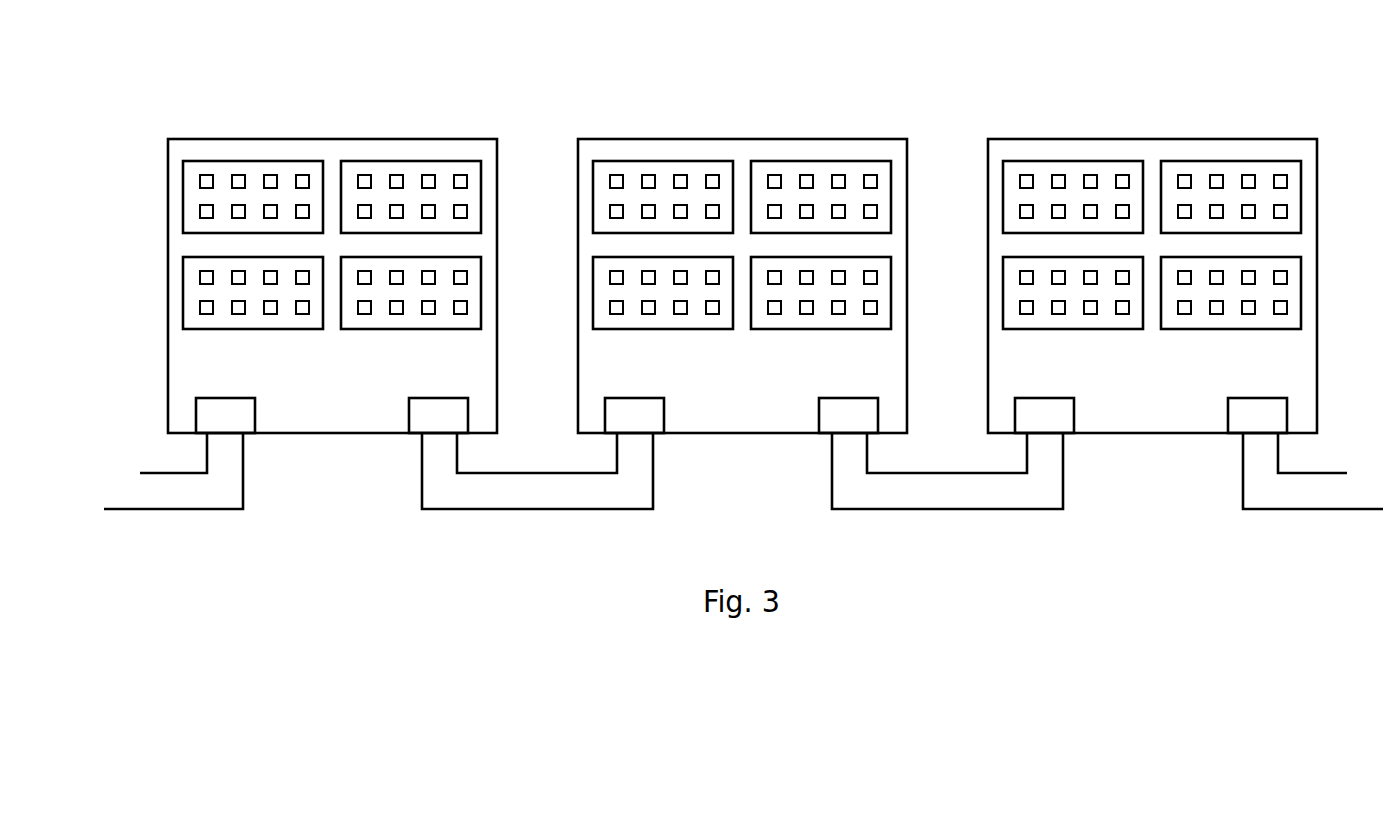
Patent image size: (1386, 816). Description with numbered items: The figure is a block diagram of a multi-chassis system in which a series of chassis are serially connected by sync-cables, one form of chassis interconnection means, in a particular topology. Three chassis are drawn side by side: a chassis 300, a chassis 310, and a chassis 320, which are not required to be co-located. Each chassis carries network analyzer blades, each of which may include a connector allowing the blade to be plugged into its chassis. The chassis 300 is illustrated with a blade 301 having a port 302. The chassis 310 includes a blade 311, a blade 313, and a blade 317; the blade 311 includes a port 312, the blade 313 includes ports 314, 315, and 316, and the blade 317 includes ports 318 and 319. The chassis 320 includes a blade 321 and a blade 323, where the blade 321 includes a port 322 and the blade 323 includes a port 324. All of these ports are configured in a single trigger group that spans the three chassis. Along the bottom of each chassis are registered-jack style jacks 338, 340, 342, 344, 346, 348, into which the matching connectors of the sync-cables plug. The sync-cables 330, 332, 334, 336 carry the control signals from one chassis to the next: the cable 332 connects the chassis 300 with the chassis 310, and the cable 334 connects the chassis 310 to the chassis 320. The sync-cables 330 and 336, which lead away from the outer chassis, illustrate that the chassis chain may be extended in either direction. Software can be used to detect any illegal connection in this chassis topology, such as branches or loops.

The chassis 300 is at (310, 278).
The blade 301 is at (225, 324).
The port 302 is at (235, 315).
The chassis 310 is at (718, 271).
The blade 311 is at (663, 145).
The port 312 is at (675, 161).
The blade 313 is at (631, 297).
The port 314 is at (609, 278).
The port 315 is at (646, 270).
The port 316 is at (615, 315).
The blade 317 is at (821, 297).
The port 318 is at (805, 270).
The port 319 is at (805, 315).
The chassis 320 is at (1150, 279).
The blade 321 is at (1231, 161).
The port 322 is at (1215, 173).
The blade 323 is at (1260, 317).
The port 324 is at (1247, 316).
The sync-cable 330 is at (180, 509).
The sync-cable 332 is at (485, 509).
The sync-cable 334 is at (895, 509).
The sync-cable 336 is at (1298, 509).
The RJ-45 jack 338 is at (203, 413).
The RJ-45 jack 340 is at (418, 415).
The RJ-45 jack 342 is at (612, 413).
The RJ-45 jack 344 is at (827, 415).
The RJ-45 jack 346 is at (1022, 413).
The RJ-45 jack 348 is at (1237, 415).